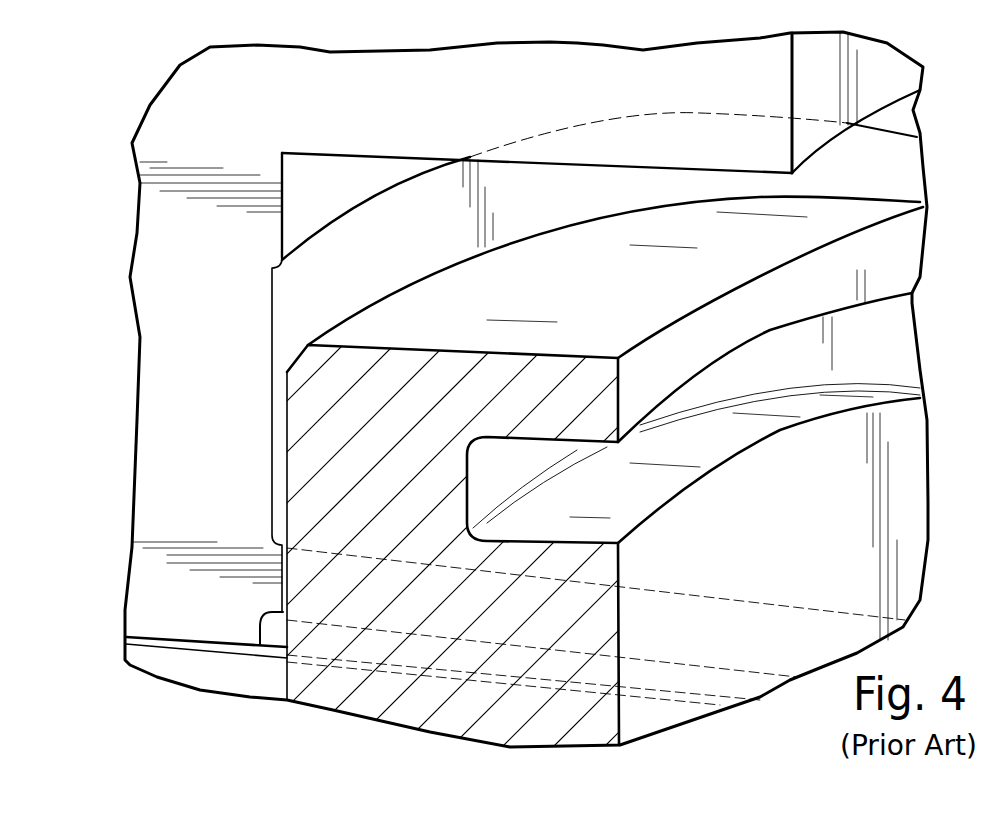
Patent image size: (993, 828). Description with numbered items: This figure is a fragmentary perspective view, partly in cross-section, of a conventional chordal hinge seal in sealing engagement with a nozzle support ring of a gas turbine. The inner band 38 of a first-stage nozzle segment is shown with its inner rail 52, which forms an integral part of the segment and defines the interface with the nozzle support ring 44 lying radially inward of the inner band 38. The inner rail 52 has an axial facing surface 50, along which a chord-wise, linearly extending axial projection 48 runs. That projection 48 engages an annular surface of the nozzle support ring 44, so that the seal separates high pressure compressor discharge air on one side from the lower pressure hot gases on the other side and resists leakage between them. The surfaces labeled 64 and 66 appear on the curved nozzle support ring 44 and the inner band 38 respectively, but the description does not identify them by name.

The inner band 38 is at (203, 80).
The nozzle support ring 44 is at (363, 703).
The axial projection 48 is at (277, 595).
The axial facing surface 50 is at (287, 285).
The inner rail 52 is at (185, 383).
The curved surface 64 is at (540, 310).
The edge facet 66 is at (837, 140).